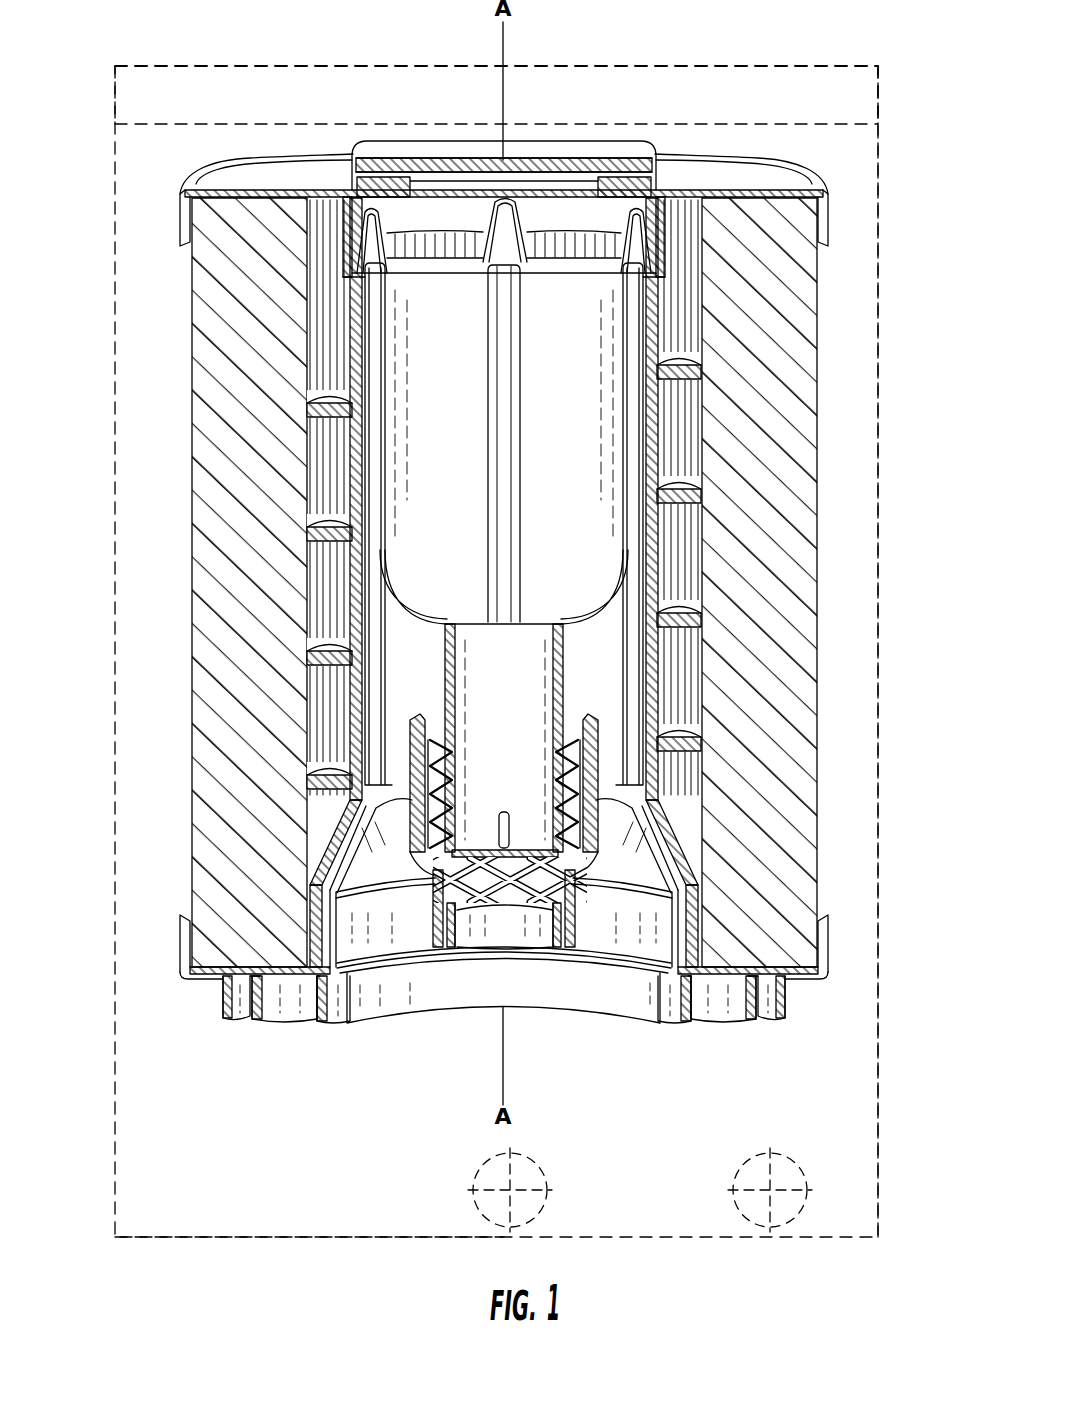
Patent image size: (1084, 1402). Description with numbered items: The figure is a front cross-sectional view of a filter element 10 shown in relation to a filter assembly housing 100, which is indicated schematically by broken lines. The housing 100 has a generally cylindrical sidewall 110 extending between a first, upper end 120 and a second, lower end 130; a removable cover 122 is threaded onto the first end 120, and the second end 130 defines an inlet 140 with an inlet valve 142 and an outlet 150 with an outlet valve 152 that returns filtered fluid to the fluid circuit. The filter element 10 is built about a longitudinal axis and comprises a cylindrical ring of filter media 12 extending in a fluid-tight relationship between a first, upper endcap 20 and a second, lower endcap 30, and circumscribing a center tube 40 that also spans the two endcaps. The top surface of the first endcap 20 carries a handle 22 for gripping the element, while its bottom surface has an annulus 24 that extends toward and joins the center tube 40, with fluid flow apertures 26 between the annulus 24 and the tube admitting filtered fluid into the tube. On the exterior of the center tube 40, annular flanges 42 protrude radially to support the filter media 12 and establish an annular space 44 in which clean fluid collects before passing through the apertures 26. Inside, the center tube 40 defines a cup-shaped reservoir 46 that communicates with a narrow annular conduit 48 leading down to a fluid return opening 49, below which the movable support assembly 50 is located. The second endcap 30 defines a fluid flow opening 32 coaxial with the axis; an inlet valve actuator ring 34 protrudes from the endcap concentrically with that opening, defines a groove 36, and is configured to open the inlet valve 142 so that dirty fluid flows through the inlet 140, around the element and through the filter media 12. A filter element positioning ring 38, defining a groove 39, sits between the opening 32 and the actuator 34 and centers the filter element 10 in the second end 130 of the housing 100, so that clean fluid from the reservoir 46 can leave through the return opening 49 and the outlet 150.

The filter element 10 is at (133, 158).
The filter media 12 is at (818, 566).
The first endcap 20 is at (848, 204).
The handle 22 is at (366, 150).
The annulus 24 is at (662, 247).
The fluid flow apertures 26 is at (440, 240).
The second endcap 30 is at (848, 966).
The fluid flow opening 32 is at (543, 1008).
The inlet valve actuator ring 34 is at (778, 1022).
The groove 36 is at (240, 1026).
The filter element positioning ring 38 is at (682, 1024).
The groove 39 is at (330, 1026).
The center tube 40 is at (320, 354).
The annular flanges 42 is at (330, 406).
The annular space 44 is at (330, 470).
The cup-shaped reservoir 46 is at (420, 548).
The annular conduit 48 is at (490, 688).
The fluid return opening 49 is at (600, 845).
The movable support assembly 50 is at (374, 850).
The housing 100 is at (898, 425).
The sidewall 110 is at (882, 700).
The first end 120 is at (906, 108).
The removable cover 122 is at (766, 85).
The second end 130 is at (92, 1148).
The inlet 140 is at (829, 1181).
The inlet valve 142 is at (778, 1208).
The outlet 150 is at (478, 1182).
The outlet valve 152 is at (493, 1213).